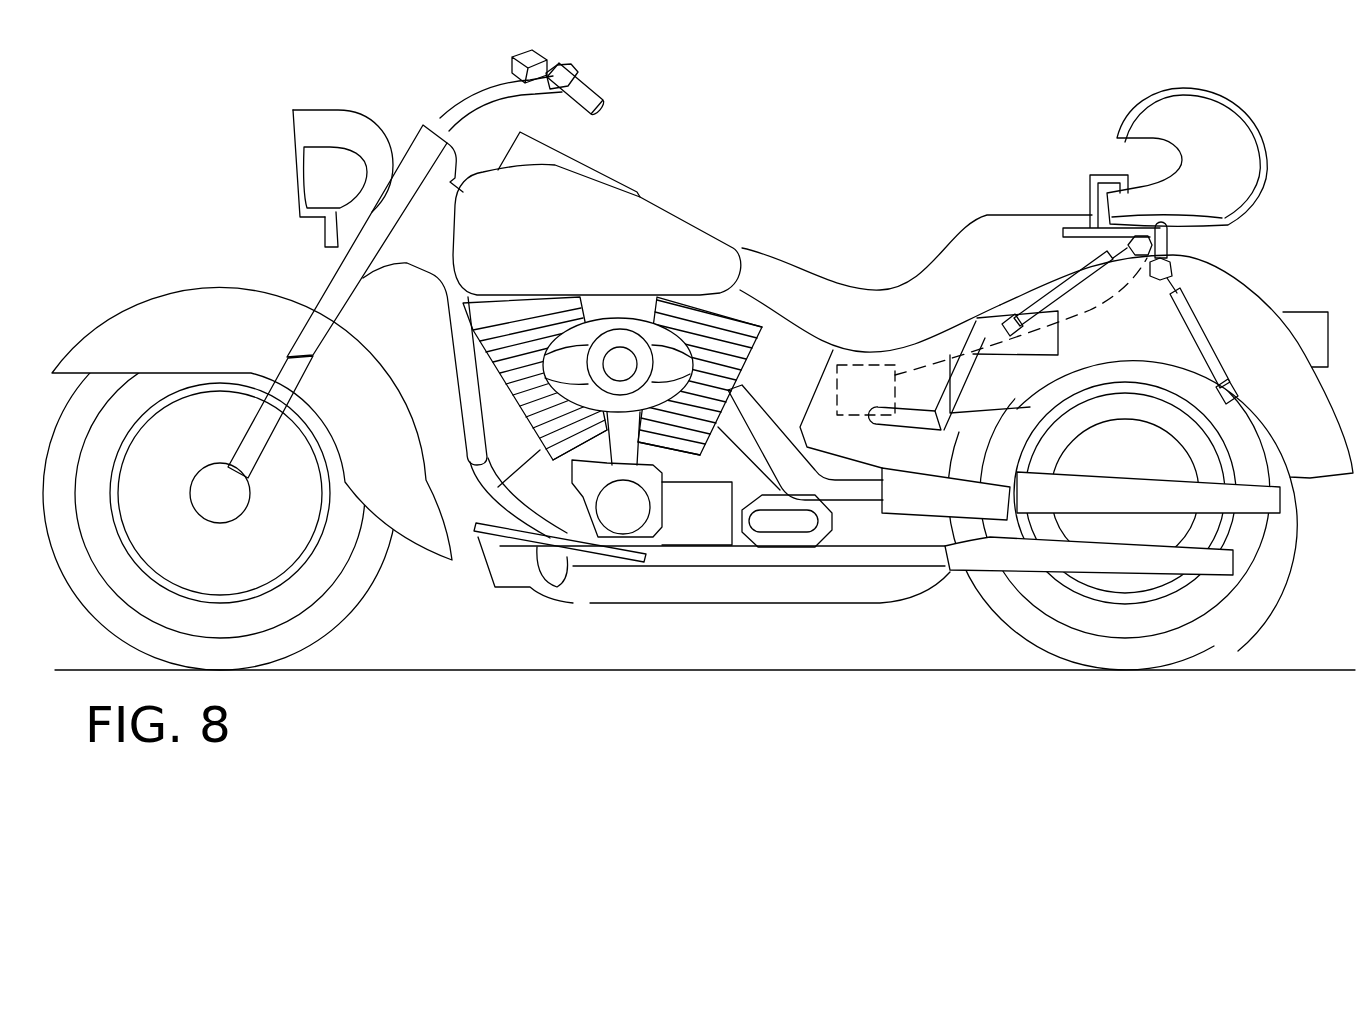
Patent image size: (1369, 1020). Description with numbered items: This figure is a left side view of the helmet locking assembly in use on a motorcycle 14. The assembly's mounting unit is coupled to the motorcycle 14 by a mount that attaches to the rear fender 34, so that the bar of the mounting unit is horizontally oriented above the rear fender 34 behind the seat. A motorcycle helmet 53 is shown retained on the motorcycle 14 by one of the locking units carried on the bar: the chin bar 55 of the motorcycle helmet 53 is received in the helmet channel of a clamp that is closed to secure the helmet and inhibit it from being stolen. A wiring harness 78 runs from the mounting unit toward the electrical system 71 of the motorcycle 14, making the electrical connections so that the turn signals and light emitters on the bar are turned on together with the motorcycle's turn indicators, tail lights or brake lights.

The motorcycle 14 is at (987, 213).
The rear fender 34 is at (1250, 290).
The motorcycle helmet 53 is at (1190, 90).
The chin bar 55 is at (1116, 180).
The electrical system 71 is at (867, 365).
The wiring harness 78 is at (1075, 313).